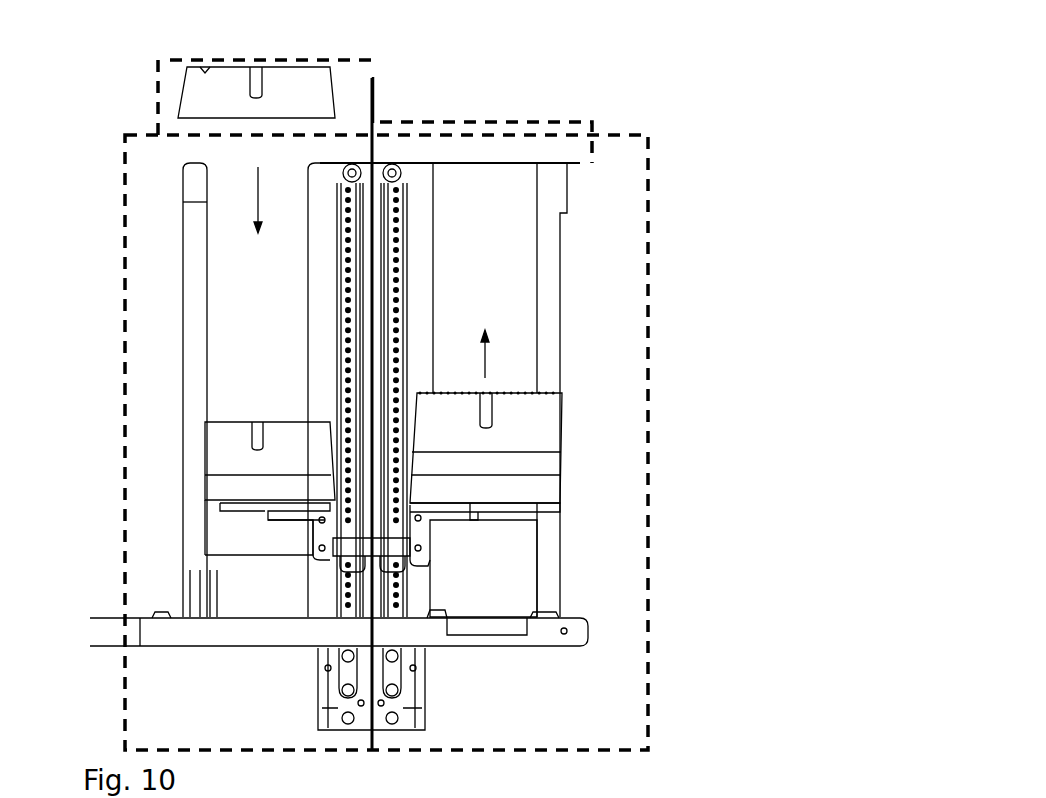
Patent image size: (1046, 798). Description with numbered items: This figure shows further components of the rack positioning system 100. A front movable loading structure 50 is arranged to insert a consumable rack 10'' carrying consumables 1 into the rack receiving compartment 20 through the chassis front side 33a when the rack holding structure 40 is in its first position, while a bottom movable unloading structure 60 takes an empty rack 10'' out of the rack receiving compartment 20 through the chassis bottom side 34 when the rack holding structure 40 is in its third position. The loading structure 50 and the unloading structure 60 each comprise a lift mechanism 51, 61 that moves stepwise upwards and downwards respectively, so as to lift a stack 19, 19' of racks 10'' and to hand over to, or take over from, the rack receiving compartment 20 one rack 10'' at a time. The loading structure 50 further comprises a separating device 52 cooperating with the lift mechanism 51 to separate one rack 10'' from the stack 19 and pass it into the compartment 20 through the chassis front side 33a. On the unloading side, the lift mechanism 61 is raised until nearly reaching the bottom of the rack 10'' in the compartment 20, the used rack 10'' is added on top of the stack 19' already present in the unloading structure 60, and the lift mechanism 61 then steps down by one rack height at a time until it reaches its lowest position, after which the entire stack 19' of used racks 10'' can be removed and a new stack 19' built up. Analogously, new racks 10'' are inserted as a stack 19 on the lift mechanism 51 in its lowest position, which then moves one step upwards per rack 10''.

The rack positioning system 100 is at (654, 93).
The rack receiving compartment 20 is at (156, 75).
The consumable rack 10'' is at (373, 285).
The rack holding structure 40 is at (125, 134).
The chassis front side 33a is at (373, 77).
The separating device 52 is at (537, 122).
The chassis bottom side 34 is at (227, 135).
The bottom movable unloading structure 60 is at (125, 337).
The front movable loading structure 50 is at (648, 368).
The consumables 1 is at (517, 393).
The stack of used racks 19' is at (230, 516).
The lift mechanism of the unloading structure 61 is at (282, 528).
The stack of racks 19 is at (522, 528).
The lift mechanism of the loading structure 51 is at (512, 515).